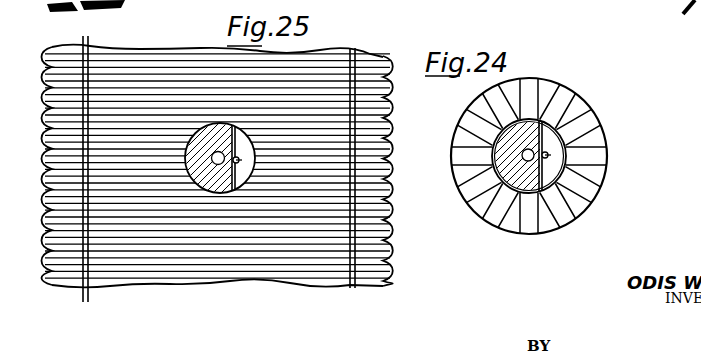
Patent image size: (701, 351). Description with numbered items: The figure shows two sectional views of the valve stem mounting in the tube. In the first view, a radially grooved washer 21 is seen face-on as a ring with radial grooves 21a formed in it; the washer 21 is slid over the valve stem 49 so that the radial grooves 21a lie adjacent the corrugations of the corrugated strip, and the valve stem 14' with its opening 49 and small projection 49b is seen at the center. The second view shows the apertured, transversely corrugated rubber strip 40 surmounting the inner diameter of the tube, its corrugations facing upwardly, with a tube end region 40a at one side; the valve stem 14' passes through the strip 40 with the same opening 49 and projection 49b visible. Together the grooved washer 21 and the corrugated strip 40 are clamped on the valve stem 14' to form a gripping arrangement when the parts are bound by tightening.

In FIG. 25, the corrugated rubber strip 40 is at (378, 67).
In FIG. 25, the tube end 40a is at (387, 95).
In FIG. 25, the valve stem 14' is at (208, 221).
In FIG. 24, the valve stem 14' is at (525, 173).
In FIG. 25, the valve stem 49 is at (240, 160).
In FIG. 24, the valve stem 49 is at (548, 159).
In FIG. 25, the projection 49b is at (247, 183).
In FIG. 24, the projection 49b is at (551, 165).
In FIG. 24, the radially grooved washer 21 is at (599, 138).
In FIG. 24, the radial grooves 21a is at (604, 160).